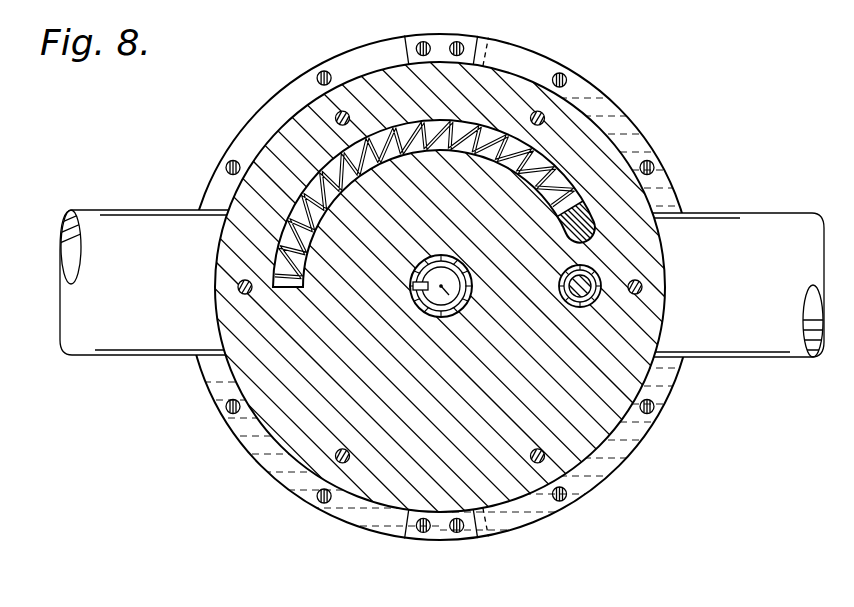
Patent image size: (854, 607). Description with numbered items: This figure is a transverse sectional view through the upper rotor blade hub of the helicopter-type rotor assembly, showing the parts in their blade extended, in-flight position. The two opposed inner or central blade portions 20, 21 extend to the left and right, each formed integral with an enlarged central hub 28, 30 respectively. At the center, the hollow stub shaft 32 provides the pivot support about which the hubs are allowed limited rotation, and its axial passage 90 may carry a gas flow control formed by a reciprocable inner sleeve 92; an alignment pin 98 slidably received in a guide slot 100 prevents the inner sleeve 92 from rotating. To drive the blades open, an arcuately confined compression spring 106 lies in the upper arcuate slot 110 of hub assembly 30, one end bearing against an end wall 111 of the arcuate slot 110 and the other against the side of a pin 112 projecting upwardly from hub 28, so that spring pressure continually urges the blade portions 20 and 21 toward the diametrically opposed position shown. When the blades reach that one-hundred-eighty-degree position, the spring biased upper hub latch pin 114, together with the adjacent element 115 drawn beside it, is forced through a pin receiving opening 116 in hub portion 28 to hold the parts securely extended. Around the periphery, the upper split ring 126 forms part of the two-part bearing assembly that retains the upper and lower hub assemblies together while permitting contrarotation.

The inner blade portion 20 is at (140, 218).
The inner blade portion 21 is at (799, 222).
The central hub 28 is at (490, 130).
The central hub 30 is at (366, 75).
The hollow stub shaft 32 is at (427, 317).
The axial passage 90 is at (433, 325).
The inner sleeve 92 is at (418, 313).
The alignment pin 98 is at (415, 288).
The guide slot 100 is at (417, 298).
The compression spring 106 is at (560, 218).
The arcuate slot 110 is at (342, 160).
The end wall 111 is at (284, 282).
The pin 112 is at (602, 214).
The upper hub latch pin 114 is at (601, 277).
The pin 115 is at (594, 299).
The pin receiving opening 116 is at (602, 290).
The upper split ring 126 is at (598, 97).